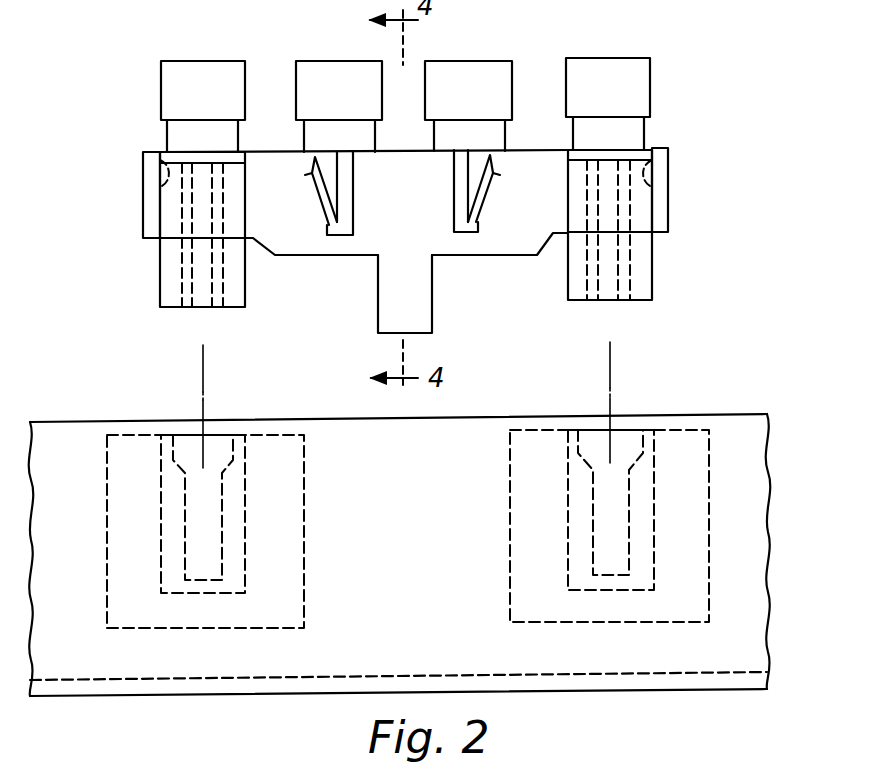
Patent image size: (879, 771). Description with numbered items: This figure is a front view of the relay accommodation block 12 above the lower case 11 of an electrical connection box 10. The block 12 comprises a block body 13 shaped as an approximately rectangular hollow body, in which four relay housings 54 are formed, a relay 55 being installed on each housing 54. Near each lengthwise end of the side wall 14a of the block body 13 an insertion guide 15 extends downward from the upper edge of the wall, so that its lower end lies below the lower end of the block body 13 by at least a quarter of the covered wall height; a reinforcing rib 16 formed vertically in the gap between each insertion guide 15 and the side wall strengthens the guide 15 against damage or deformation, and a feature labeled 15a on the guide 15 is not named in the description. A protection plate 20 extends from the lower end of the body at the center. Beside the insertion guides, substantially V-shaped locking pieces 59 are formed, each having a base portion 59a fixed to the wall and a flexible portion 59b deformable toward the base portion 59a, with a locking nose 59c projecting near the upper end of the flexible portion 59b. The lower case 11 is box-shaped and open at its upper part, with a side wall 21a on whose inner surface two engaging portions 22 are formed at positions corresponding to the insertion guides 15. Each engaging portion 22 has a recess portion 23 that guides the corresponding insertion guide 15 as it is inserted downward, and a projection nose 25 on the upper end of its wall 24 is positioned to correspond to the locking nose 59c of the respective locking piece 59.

The electrical connection box 10 is at (675, 43).
The lower case 11 is at (715, 403).
The relay accommodation block 12 is at (700, 147).
The block body 13 is at (670, 158).
The side wall 14a is at (507, 238).
The insertion guide 15 is at (162, 290).
The post hole 15a is at (157, 187).
The reinforcing rib 16 is at (212, 258).
The protection plate 20 is at (422, 333).
The side wall 21a is at (562, 658).
The engaging portion 22 is at (135, 572).
The recess portion 23 is at (161, 482).
The wall 24 is at (305, 562).
The projection nose 25 is at (310, 437).
The relay housing 54 is at (170, 133).
The relay 55 is at (180, 65).
The locking piece 59 is at (337, 238).
The base portion 59a is at (347, 198).
The flexible portion 59b is at (315, 198).
The locking nose 59c is at (305, 175).